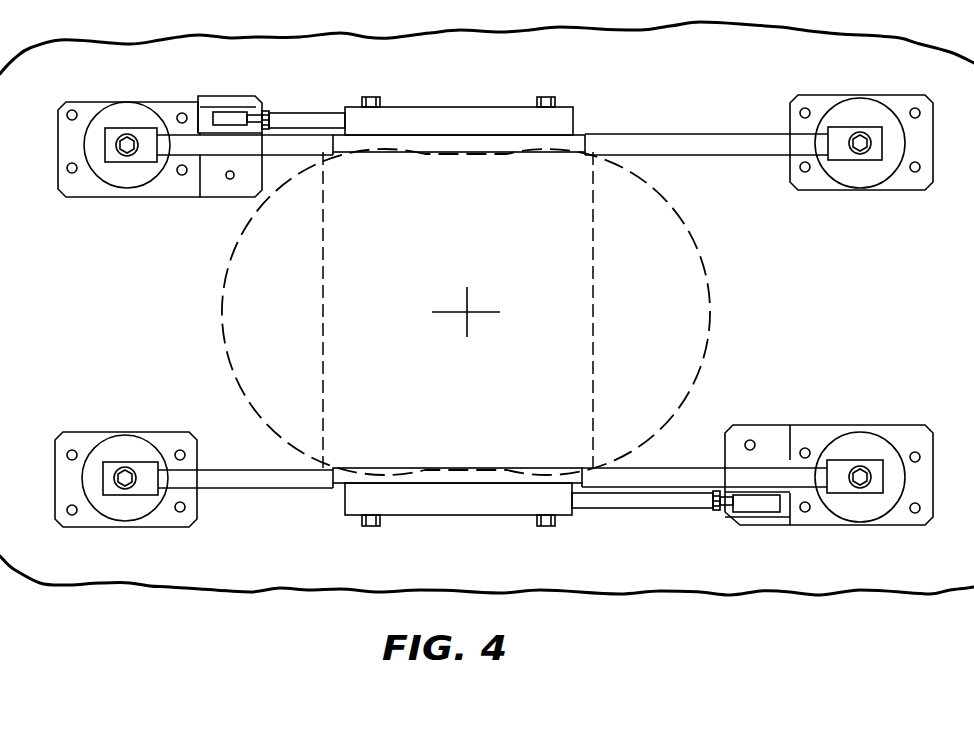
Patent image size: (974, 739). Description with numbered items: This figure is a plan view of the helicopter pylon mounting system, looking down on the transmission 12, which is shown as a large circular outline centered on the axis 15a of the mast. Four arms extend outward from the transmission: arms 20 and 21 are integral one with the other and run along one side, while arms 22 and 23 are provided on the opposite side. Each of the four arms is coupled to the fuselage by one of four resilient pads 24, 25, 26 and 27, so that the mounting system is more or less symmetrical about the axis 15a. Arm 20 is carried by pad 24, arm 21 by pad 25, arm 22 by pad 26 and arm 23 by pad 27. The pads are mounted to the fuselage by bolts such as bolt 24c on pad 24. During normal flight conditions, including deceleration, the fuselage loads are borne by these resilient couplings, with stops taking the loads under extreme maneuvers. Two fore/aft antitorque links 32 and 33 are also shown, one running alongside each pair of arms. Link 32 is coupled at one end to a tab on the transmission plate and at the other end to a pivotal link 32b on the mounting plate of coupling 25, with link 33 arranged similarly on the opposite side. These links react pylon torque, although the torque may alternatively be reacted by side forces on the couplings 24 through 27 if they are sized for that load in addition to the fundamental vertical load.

The transmission 12 is at (526, 392).
The axis of the mast 15a is at (468, 305).
The arm 20 is at (252, 478).
The arm 21 is at (658, 477).
The arm 22 is at (307, 146).
The arm 23 is at (688, 142).
The resilient pad 24 is at (103, 510).
The bolt 24c is at (184, 512).
The resilient pad 25 is at (863, 510).
The resilient pad 26 is at (108, 113).
The resilient pad 27 is at (875, 112).
The fore/aft antitorque link 32 is at (652, 507).
The pivotal link 32b is at (753, 507).
The fore/aft antitorque link 33 is at (303, 119).